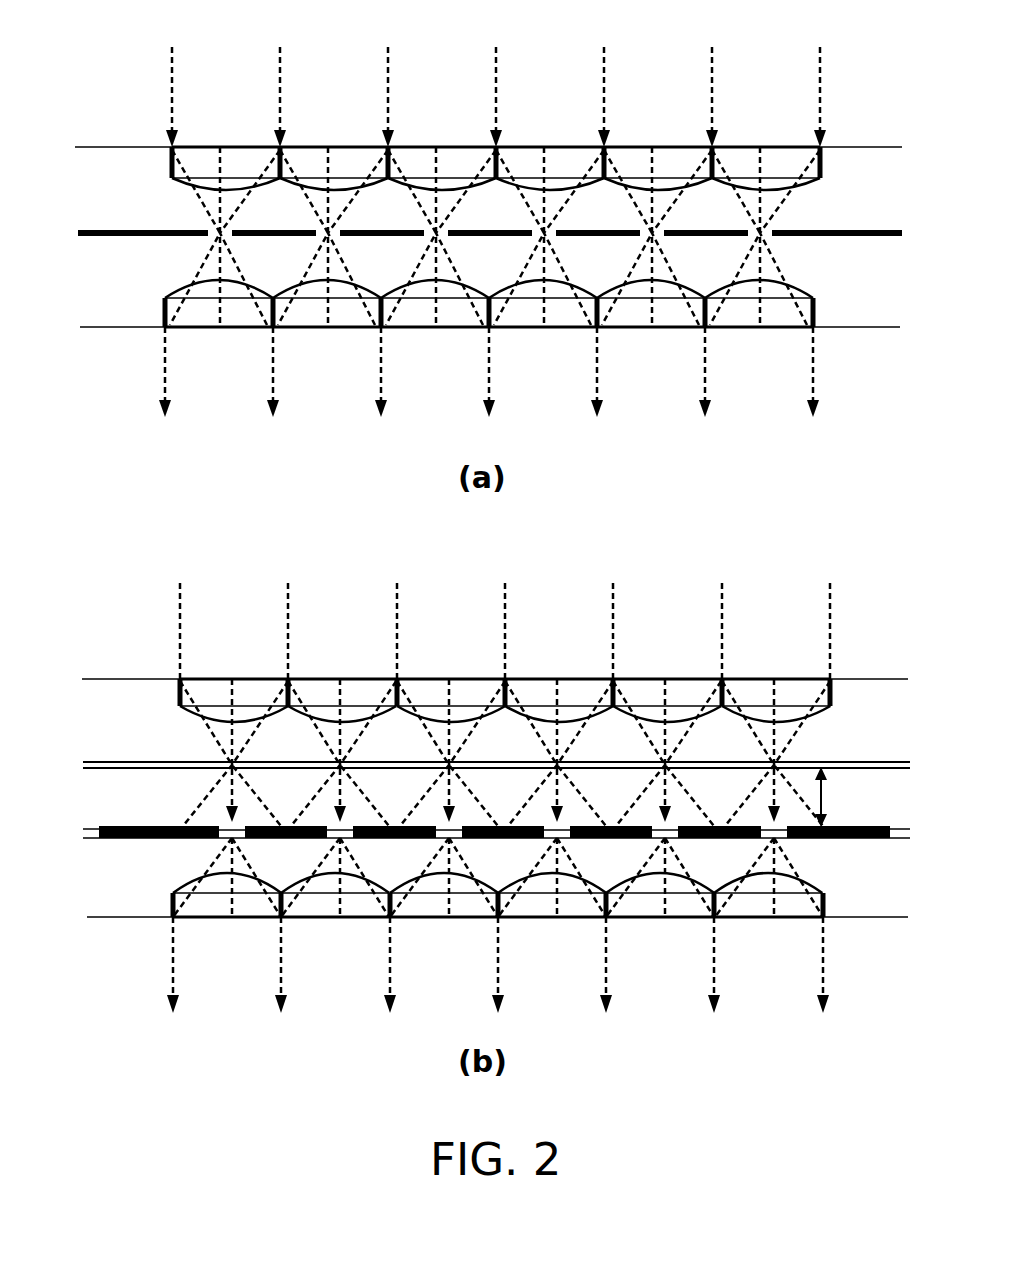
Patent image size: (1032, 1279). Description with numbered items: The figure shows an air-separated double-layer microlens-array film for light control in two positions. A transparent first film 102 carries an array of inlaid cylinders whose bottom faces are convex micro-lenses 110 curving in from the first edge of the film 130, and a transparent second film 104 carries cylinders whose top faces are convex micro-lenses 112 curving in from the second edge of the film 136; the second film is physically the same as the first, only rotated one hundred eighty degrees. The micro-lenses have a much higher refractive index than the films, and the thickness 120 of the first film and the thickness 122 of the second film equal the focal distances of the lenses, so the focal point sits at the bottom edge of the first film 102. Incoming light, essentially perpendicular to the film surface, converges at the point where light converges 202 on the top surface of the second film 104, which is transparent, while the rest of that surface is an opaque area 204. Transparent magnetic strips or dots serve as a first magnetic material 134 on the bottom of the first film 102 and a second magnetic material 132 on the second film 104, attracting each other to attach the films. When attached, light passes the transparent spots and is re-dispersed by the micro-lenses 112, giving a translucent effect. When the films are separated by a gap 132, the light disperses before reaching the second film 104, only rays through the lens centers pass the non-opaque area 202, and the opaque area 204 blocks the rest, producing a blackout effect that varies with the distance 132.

The first film 102 is at (840, 160).
The second film 104 is at (138, 305).
The convex micro-lenses 110 is at (465, 499).
The convex micro-lenses 112 is at (494, 643).
The thickness of the first film 120 is at (222, 177).
The thickness of the second film 122 is at (222, 308).
The first edge of the film 130 is at (123, 150).
The second magnetic material 132 is at (80, 240).
The first magnetic material 134 is at (823, 240).
The second edge of the film 136 is at (778, 327).
The point where light converges 202 is at (543, 240).
The opaque area 204 is at (623, 242).